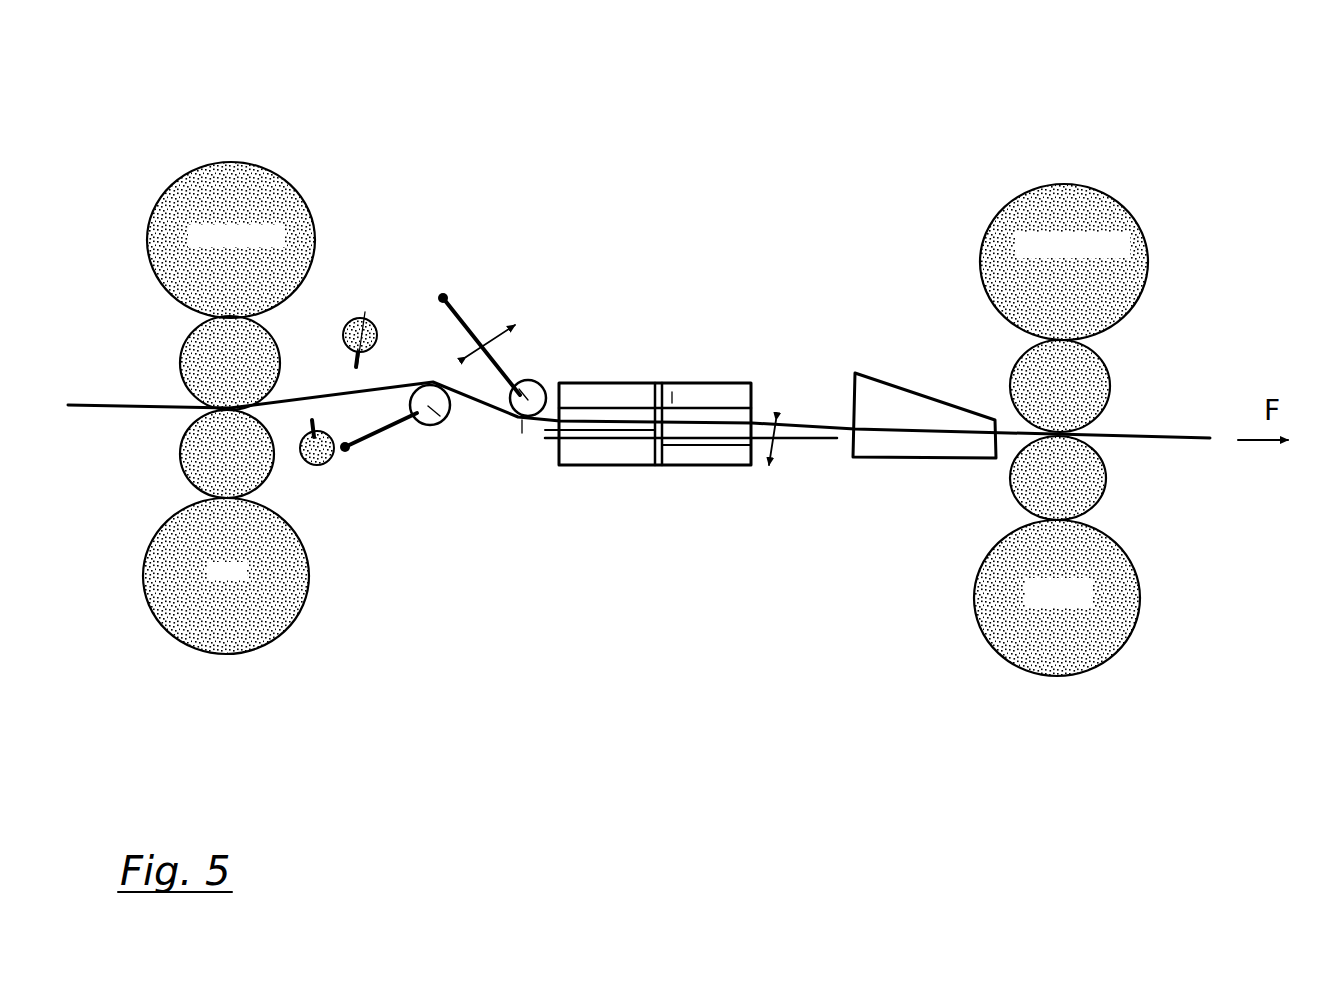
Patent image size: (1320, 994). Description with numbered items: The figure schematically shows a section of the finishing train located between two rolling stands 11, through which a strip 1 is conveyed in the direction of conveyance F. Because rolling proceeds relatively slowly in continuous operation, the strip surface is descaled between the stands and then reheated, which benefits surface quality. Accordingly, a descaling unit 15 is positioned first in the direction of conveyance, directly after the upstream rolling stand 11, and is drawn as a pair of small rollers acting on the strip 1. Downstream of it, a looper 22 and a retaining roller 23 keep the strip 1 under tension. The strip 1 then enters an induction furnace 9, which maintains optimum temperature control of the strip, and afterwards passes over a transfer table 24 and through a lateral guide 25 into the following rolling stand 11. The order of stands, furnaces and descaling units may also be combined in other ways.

The strip 1 is at (1170, 435).
The induction furnace 9 is at (667, 380).
The rolling stands 11 is at (352, 188).
The descaling unit 15 is at (322, 418).
The looper 22 is at (438, 415).
The retaining roller 23 is at (538, 393).
The transfer table 24 is at (798, 442).
The lateral guide 25 is at (932, 438).